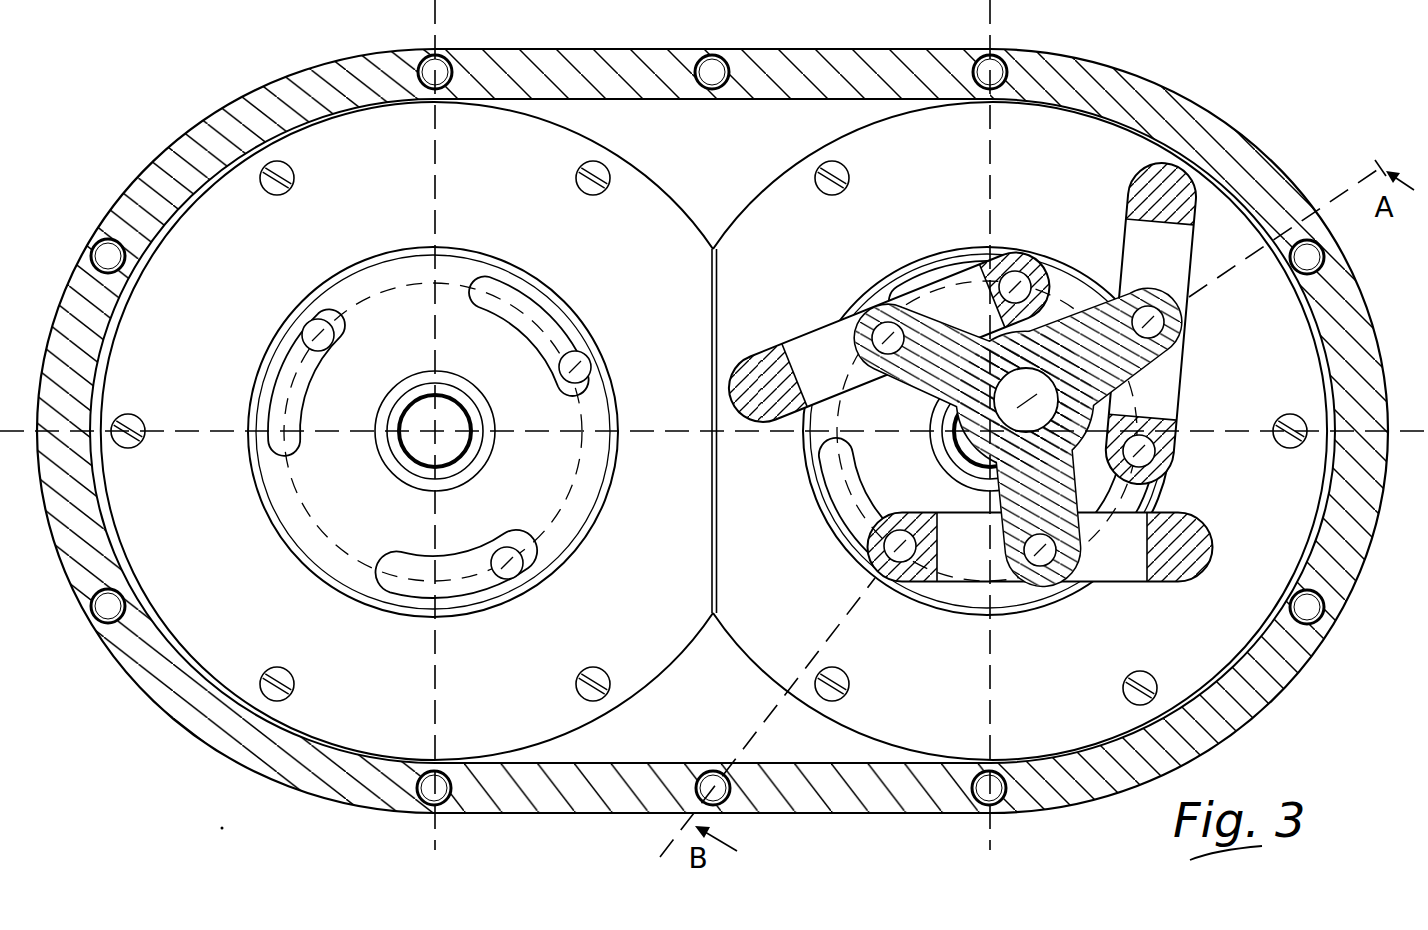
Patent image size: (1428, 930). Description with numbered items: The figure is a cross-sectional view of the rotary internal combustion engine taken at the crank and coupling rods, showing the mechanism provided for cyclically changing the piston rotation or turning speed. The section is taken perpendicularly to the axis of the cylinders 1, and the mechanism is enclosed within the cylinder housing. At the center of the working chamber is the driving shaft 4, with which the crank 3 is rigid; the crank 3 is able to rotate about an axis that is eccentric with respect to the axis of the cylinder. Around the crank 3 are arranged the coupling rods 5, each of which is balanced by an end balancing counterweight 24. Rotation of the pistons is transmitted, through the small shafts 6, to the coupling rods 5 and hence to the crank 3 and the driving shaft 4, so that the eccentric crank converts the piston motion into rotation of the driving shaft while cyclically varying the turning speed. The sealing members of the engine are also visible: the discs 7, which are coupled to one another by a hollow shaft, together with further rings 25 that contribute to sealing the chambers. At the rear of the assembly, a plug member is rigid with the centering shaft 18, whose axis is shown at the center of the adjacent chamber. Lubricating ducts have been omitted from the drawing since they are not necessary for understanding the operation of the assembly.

The cylinder 1 is at (1204, 134).
The crank 3 is at (1092, 397).
The driving shaft 4 is at (1050, 406).
The coupling rod 5 is at (1122, 567).
The small shaft 6 is at (592, 365).
The disc 7 is at (354, 562).
The centering shaft 18 is at (424, 438).
The balancing counterweight 24 is at (1198, 541).
The ring 25 is at (740, 228).